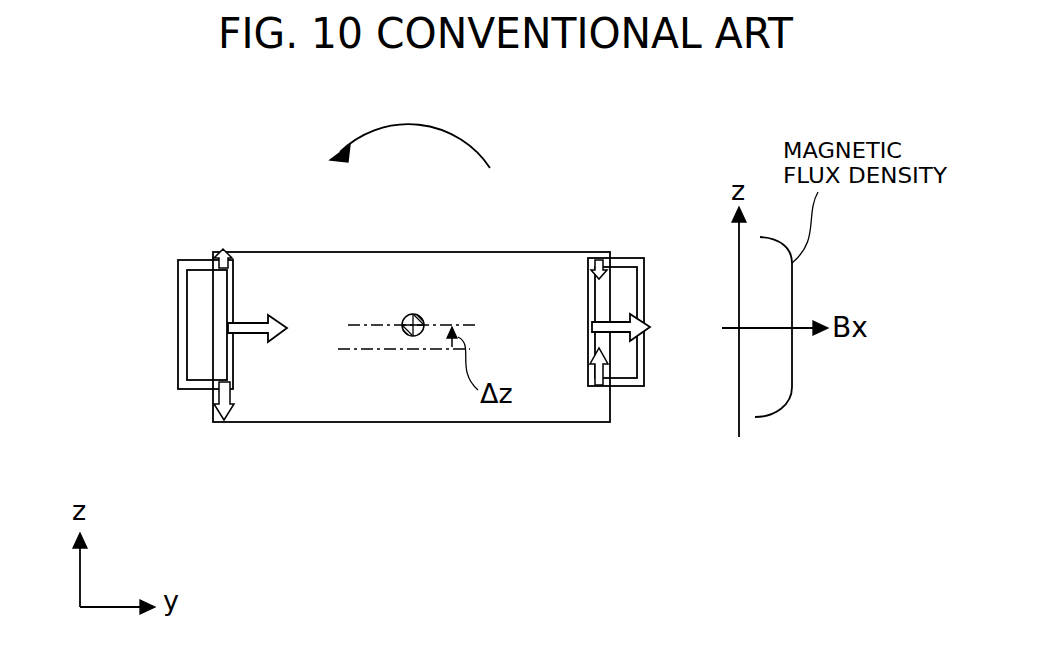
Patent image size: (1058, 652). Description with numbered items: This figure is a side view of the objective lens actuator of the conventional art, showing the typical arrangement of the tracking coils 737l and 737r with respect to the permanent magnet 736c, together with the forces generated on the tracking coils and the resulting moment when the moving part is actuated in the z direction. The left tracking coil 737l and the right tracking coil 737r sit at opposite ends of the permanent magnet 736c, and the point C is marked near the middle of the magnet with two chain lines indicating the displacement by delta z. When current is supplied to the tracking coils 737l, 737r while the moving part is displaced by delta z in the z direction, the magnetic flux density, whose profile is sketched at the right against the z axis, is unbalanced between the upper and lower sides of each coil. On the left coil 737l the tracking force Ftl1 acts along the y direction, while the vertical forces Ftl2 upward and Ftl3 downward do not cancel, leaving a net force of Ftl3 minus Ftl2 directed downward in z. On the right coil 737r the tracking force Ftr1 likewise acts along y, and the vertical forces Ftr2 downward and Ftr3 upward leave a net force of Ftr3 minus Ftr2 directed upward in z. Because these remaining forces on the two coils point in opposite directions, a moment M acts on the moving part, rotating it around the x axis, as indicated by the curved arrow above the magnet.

The permanent magnet 736c is at (402, 410).
The tracking coil 737l is at (177, 313).
The tracking coil 737r is at (623, 257).
The force on tracking coil Ftl1 is at (287, 330).
The magnetic force Ftl2 is at (225, 252).
The magnetic force Ftl3 is at (217, 408).
The force on tracking coil Ftr1 is at (610, 327).
The magnetic force Ftr2 is at (593, 260).
The magnetic force Ftr3 is at (595, 382).
The center of gravity C is at (422, 318).
The moment M is at (410, 126).